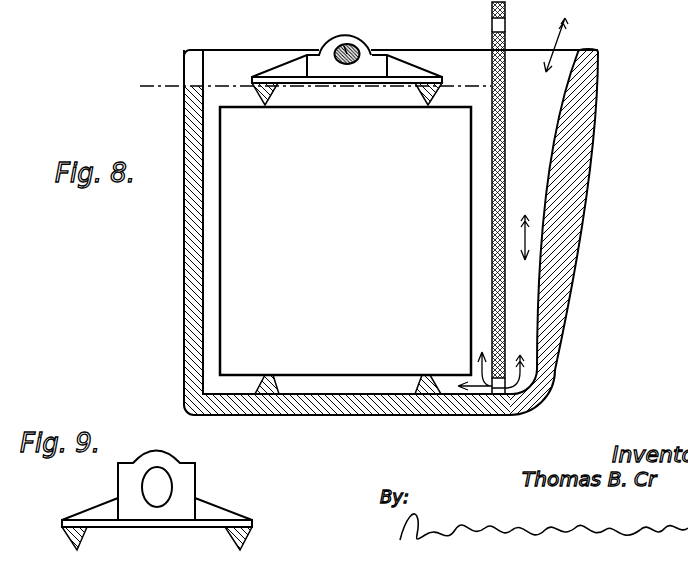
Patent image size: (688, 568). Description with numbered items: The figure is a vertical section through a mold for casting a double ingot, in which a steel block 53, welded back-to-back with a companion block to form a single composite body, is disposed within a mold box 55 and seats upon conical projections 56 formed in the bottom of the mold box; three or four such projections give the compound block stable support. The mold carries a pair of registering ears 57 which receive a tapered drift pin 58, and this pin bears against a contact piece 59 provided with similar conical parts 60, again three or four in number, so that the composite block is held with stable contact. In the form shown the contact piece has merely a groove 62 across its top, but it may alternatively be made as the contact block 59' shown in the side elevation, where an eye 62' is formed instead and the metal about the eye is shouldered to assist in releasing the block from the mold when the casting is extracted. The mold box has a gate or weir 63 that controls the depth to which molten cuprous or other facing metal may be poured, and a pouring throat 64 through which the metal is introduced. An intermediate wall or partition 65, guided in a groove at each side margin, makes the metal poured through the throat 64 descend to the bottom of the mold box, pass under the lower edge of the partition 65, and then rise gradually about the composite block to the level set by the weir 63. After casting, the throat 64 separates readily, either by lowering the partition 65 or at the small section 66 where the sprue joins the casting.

In FIG. 8, the steel block 53 is at (448, 112).
In FIG. 8, the mold box 55 is at (190, 246).
In FIG. 8, the conical projections 56 is at (268, 388).
In FIG. 8, the ears 57 is at (358, 38).
In FIG. 8, the drift pin 58 is at (344, 46).
In FIG. 8, the contact piece 59 is at (347, 54).
In FIG. 8, the conical parts 60 is at (270, 96).
In FIG. 9, the conical parts 60 is at (72, 535).
In FIG. 8, the groove 62 is at (371, 50).
In FIG. 8, the gate or weir 63 is at (190, 63).
In FIG. 8, the pouring throat 64 is at (568, 58).
In FIG. 8, the intermediate wall or partition 65 is at (506, 171).
In FIG. 8, the small section 66 is at (497, 396).
In FIG. 9, the contact block 59' is at (157, 489).
In FIG. 9, the eye 62' is at (149, 467).